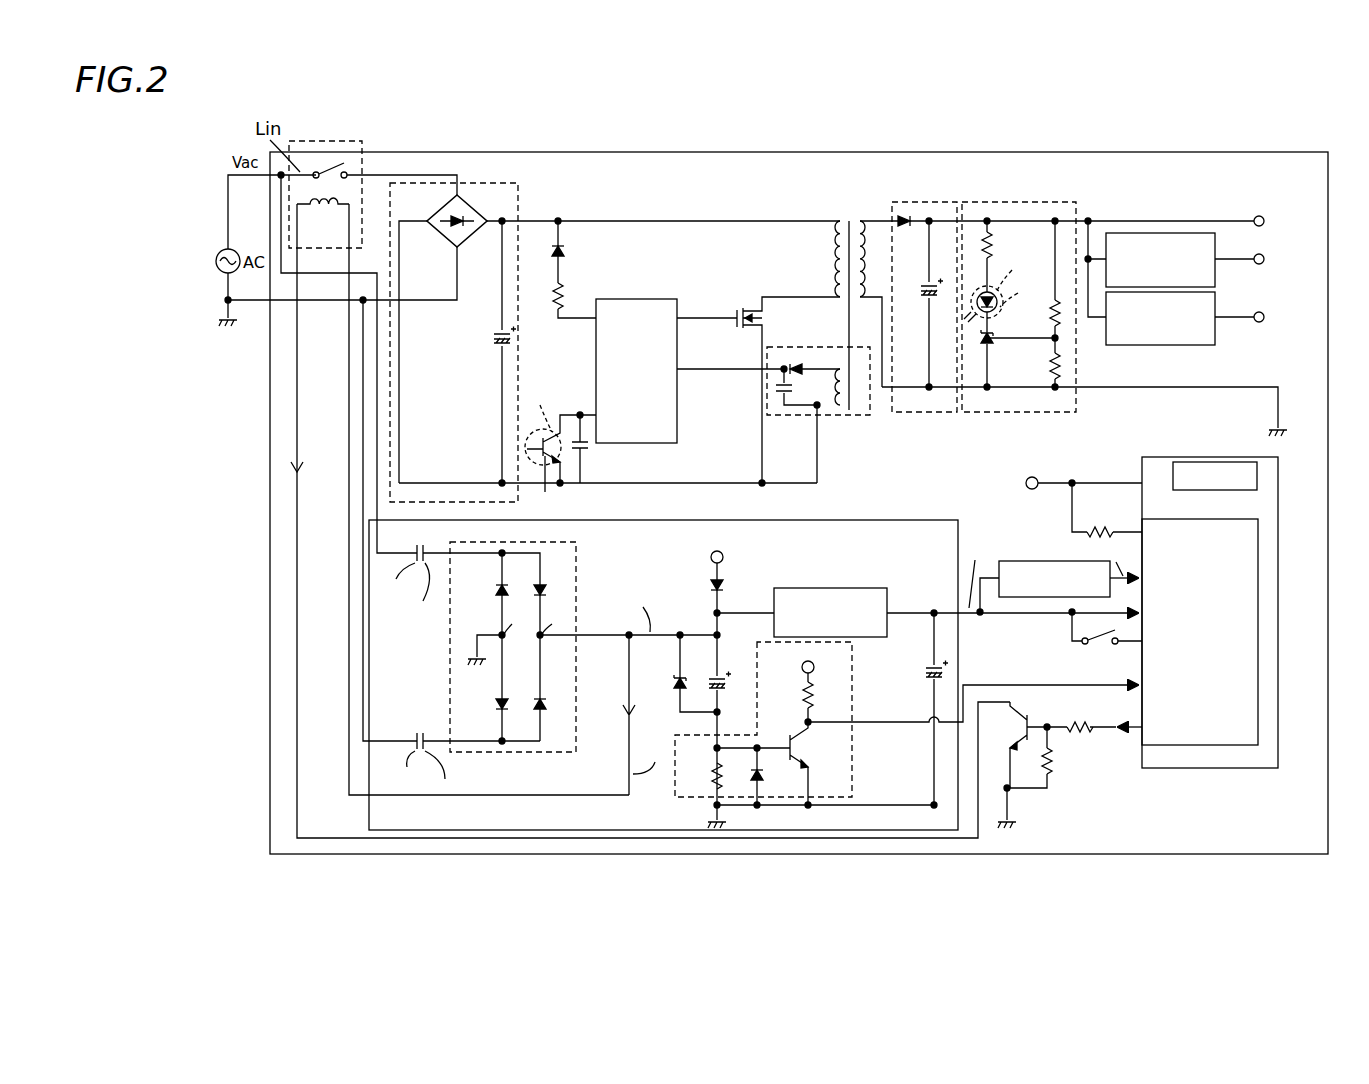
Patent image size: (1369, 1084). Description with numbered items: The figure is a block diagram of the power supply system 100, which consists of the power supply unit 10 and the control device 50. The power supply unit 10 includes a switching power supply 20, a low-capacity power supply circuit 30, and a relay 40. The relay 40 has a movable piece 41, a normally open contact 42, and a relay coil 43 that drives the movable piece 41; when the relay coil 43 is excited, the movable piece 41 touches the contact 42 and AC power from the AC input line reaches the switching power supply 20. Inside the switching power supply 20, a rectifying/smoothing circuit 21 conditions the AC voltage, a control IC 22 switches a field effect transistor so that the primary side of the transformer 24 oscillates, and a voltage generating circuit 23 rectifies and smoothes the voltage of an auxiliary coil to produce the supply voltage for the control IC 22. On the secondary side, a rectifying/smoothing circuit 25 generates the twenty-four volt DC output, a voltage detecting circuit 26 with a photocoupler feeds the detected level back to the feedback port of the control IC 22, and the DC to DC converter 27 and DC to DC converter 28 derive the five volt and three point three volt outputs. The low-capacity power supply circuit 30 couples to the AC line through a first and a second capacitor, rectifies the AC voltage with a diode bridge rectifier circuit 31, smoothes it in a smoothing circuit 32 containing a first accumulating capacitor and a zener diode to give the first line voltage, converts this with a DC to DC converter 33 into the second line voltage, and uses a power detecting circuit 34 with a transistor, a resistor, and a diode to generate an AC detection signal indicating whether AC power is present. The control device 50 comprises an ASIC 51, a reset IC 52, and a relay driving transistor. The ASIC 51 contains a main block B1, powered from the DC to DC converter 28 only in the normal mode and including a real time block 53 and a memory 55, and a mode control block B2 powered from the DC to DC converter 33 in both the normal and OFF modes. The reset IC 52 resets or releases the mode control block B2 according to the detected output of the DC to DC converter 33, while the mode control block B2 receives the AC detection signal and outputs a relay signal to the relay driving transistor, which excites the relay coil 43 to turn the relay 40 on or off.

The power supply system 100 is at (1140, 152).
The power supply unit 10 is at (630, 345).
The switching power supply 20 is at (1036, 295).
The rectifying/smoothing circuit 21 is at (518, 190).
The control IC 22 is at (630, 299).
The voltage generating circuit 23 is at (803, 347).
The transformer 24 is at (848, 210).
The rectifying/smoothing circuit 25 is at (945, 202).
The voltage detecting circuit 26 is at (1027, 202).
The DC to DC converter 27 is at (1140, 233).
The DC to DC converter 28 is at (1120, 345).
The low-capacity power supply circuit 30 is at (875, 520).
The rectifier circuit 31 is at (578, 551).
The smoothing circuit 32 is at (687, 607).
The DC to DC converter 33 is at (848, 588).
The power detecting circuit 34 is at (856, 672).
The relay 40 is at (649, 476).
The movable piece 41 is at (316, 170).
The contact 42 is at (346, 170).
The relay coil 43 is at (330, 206).
The control device 50 is at (973, 497).
The application-specific integrated circuit 51 is at (1197, 457).
The reset IC 52 is at (1012, 561).
The real time block 53 is at (1218, 768).
The memory 55 is at (1222, 462).
The main block B1 is at (1278, 475).
The mode control block B2 is at (1258, 586).